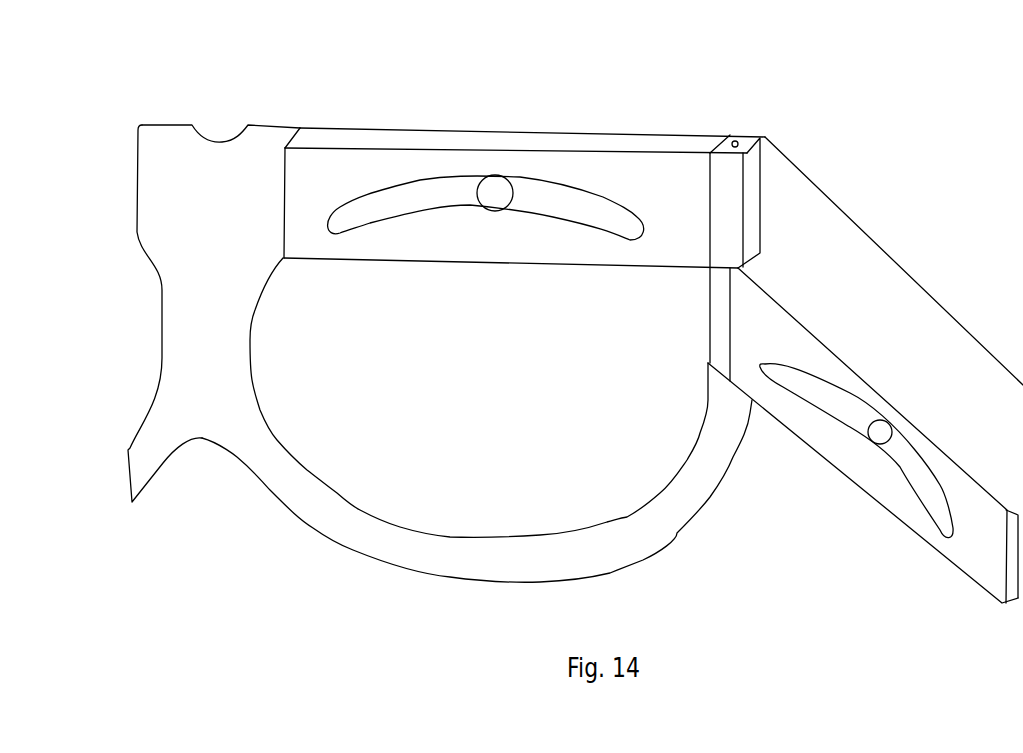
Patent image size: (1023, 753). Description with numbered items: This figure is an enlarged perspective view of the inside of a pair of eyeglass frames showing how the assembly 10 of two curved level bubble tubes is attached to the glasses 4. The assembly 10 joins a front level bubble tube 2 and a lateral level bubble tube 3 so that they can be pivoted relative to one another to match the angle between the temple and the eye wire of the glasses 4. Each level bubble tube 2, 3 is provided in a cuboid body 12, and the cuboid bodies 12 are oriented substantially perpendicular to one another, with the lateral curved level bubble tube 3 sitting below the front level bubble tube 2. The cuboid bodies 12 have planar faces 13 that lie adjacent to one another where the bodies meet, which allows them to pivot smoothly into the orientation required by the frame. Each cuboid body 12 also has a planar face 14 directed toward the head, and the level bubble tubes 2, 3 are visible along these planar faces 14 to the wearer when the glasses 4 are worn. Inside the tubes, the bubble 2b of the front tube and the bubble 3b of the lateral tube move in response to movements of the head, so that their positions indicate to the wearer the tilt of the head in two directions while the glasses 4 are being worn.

The assembly 10 is at (680, 340).
The level bubble tube 2 is at (585, 187).
The bubble 2b is at (490, 177).
The level bubble tube 3 is at (915, 498).
The bubble 3b is at (872, 447).
The glasses 4 is at (637, 563).
The cuboid body 12 is at (416, 245).
The planar face 13 is at (863, 278).
The planar face 14 is at (345, 178).